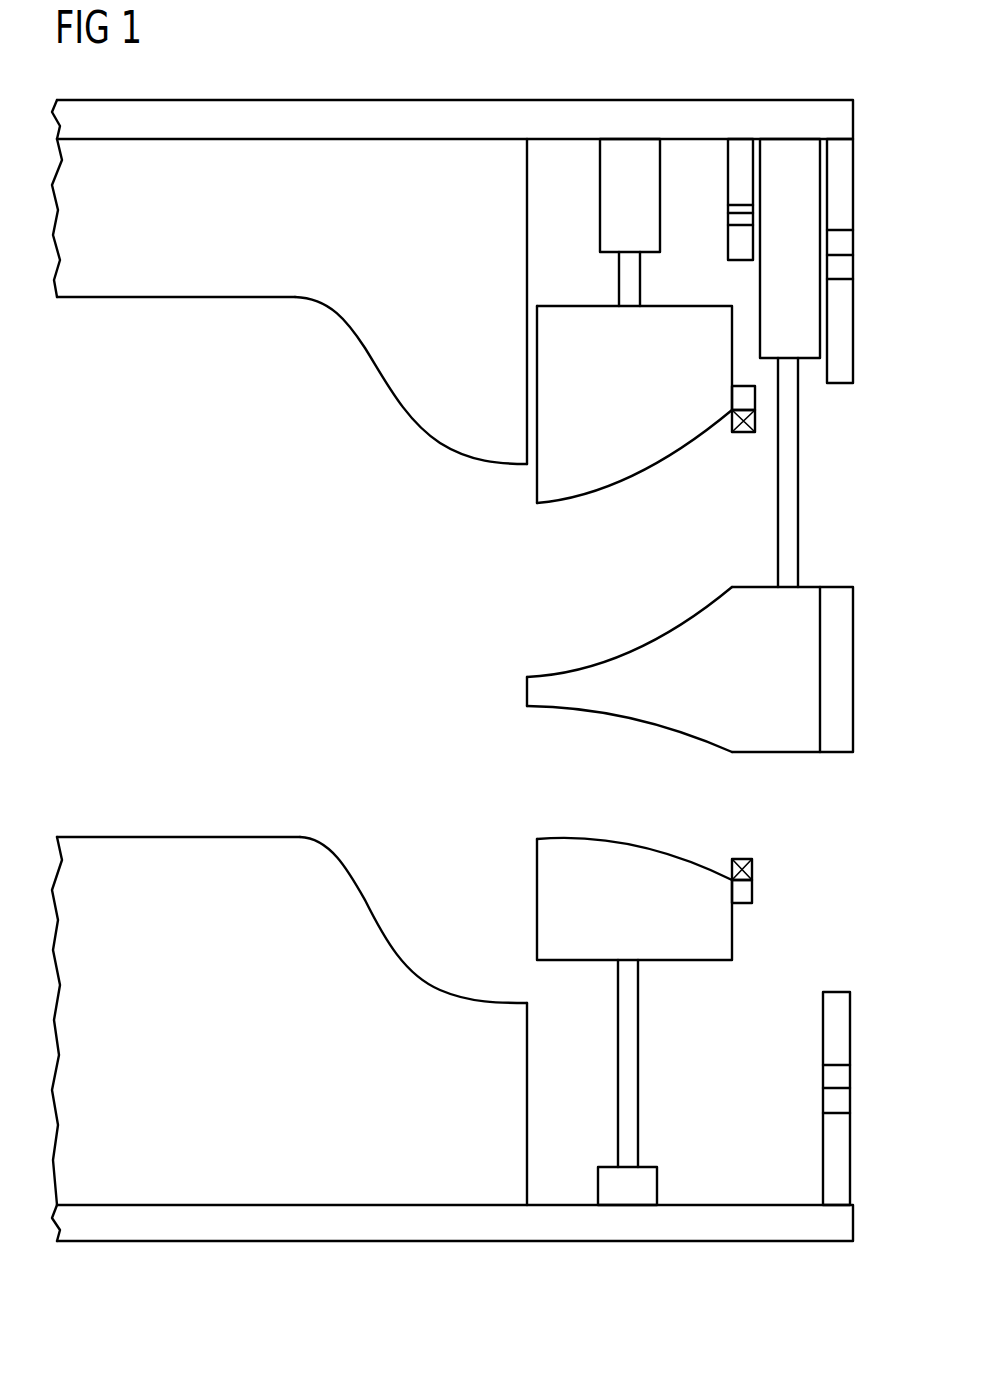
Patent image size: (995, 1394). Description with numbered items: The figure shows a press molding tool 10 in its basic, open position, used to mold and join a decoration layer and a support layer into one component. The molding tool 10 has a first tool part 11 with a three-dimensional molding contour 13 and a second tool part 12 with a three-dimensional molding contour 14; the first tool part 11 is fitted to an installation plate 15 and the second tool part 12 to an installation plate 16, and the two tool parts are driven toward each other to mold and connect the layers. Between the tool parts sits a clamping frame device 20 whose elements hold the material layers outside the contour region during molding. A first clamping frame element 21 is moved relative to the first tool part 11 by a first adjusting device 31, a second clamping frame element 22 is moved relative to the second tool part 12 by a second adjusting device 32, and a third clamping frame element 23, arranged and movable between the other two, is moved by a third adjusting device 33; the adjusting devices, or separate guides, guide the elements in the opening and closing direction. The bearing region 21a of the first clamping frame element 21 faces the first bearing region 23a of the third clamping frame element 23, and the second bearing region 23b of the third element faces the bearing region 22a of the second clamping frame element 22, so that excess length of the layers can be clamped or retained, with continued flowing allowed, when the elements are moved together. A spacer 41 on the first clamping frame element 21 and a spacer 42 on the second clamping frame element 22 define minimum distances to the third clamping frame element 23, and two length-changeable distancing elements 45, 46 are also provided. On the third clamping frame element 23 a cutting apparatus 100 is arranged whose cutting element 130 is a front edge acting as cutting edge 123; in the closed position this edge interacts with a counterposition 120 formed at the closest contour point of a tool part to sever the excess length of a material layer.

The molding tool 10 is at (121, 578).
The first tool part 11 is at (289, 301).
The second tool part 12 is at (289, 987).
The three-dimensional molding contour 13 is at (263, 298).
The three-dimensional molding contour 14 is at (262, 840).
The installation plate 15 is at (360, 112).
The installation plate 16 is at (301, 1229).
The clamping frame device 20 is at (538, 570).
The first clamping frame element 21 is at (634, 436).
The bearing region 21a is at (583, 497).
The second clamping frame element 22 is at (601, 872).
The bearing region 22a is at (630, 843).
The third clamping frame element 23 is at (616, 703).
The first bearing region 23a is at (572, 670).
The second bearing region 23b is at (610, 712).
The first adjusting device 31 is at (613, 190).
The second adjusting device 32 is at (647, 1187).
The third adjusting device 33 is at (771, 267).
The spacer 41 is at (740, 433).
The spacer 42 is at (755, 868).
The length-changeable distancing element 45 is at (740, 172).
The length-changeable distancing element 46 is at (832, 1157).
The cutting apparatus 100 is at (483, 672).
The counterposition 120 is at (521, 1007).
The cutting edge 123 is at (518, 707).
The cutting element 130 is at (533, 739).